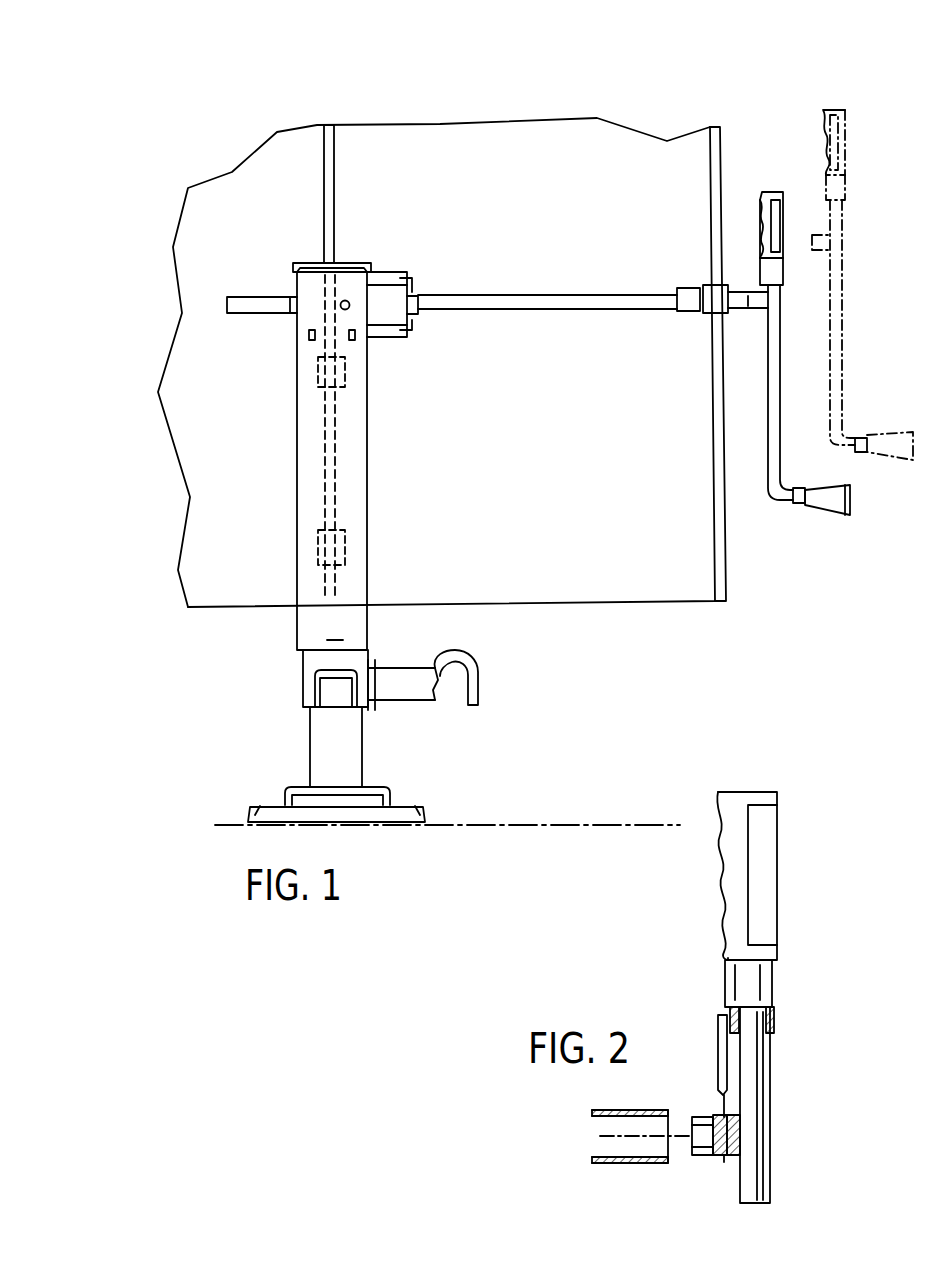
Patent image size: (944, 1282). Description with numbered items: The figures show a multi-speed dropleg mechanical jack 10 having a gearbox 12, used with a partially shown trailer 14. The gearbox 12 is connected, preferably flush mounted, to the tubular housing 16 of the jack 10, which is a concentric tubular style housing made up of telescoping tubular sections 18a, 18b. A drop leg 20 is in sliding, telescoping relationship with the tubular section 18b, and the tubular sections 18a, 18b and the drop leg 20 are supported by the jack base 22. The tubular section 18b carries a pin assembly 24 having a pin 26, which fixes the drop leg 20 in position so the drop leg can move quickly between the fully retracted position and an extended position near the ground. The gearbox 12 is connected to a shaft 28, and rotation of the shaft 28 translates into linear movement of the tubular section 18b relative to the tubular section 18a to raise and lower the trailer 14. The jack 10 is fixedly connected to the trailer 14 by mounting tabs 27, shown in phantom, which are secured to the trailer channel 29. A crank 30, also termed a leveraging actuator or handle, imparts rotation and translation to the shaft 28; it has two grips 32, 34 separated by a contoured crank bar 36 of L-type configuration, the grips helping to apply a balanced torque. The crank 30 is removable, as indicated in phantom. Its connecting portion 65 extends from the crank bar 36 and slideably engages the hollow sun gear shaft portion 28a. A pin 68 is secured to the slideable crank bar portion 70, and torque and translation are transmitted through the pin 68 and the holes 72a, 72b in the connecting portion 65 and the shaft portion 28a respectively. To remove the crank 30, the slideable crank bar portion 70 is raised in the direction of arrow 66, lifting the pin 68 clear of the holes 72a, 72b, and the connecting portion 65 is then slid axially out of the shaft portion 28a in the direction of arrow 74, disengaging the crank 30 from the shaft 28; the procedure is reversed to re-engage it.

In FIG. 1, the multi-speed dropleg mechanical jack 10 is at (381, 238).
In FIG. 1, the gearbox 12 is at (387, 272).
In FIG. 1, the trailer 14 is at (508, 125).
In FIG. 1, the tubular housing 16 is at (279, 379).
In FIG. 1, the telescoping tubular section 18a is at (298, 572).
In FIG. 1, the telescoping tubular section 18b is at (304, 668).
In FIG. 1, the drop leg 20 is at (310, 752).
In FIG. 1, the jack base 22 is at (250, 810).
In FIG. 1, the pin assembly 24 is at (416, 714).
In FIG. 1, the pin 26 is at (470, 656).
In FIG. 1, the mounting tabs 27 is at (330, 390).
In FIG. 1, the shaft 28 is at (496, 294).
In FIG. 2, the hollow sun gear shaft portion 28a is at (610, 1165).
In FIG. 1, the trailer channel 29 is at (324, 127).
In FIG. 1, the crank 30 is at (768, 195).
In FIG. 2, the crank 30 is at (777, 870).
In FIG. 1, the grip 32 is at (762, 232).
In FIG. 1, the grip 34 is at (824, 505).
In FIG. 1, the contoured crank bar 36 is at (768, 365).
In FIG. 2, the contoured crank bar 36 is at (770, 1100).
In FIG. 2, the connecting portion 65 is at (708, 1160).
In FIG. 2, the arrow 66 is at (693, 1037).
In FIG. 2, the pin 68 is at (718, 1070).
In FIG. 2, the slideable crank bar portion 70 is at (772, 985).
In FIG. 2, the hole 72a is at (722, 1162).
In FIG. 2, the hole 72b is at (662, 1165).
In FIG. 2, the arrow 74 is at (775, 1136).